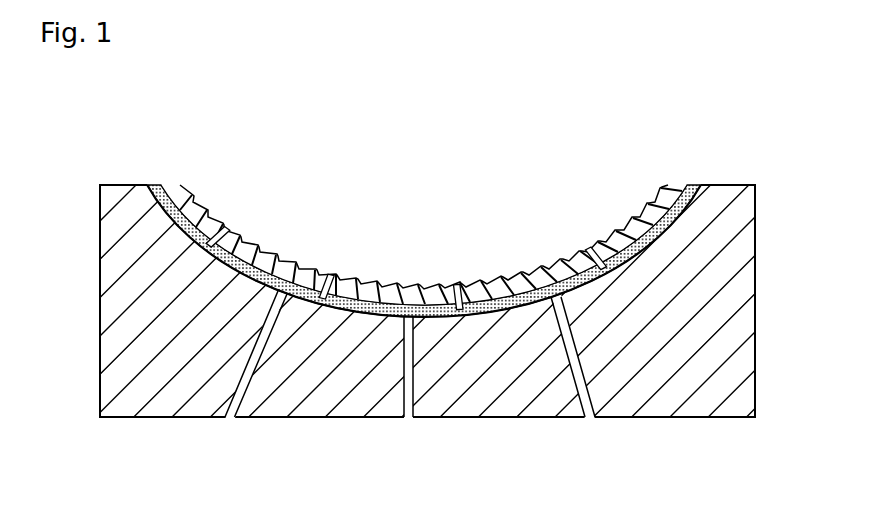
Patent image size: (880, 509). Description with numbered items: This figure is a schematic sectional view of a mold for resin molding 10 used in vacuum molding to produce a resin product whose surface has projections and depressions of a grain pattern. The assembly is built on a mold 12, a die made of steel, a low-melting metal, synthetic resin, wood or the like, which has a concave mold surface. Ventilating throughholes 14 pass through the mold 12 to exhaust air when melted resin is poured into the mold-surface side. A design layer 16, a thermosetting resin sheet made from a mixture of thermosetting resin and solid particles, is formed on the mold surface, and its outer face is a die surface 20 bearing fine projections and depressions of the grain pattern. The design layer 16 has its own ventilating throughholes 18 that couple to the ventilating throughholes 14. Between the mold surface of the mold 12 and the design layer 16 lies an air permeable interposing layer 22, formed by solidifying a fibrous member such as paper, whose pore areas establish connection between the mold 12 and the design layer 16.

The mold for resin molding 10 is at (418, 131).
The mold 12 is at (166, 405).
The ventilating throughholes 14 is at (227, 415).
The design layer 16 is at (646, 220).
The ventilating throughholes 18 is at (218, 229).
The die surface 20 is at (516, 279).
The air permeable interposing layer 22 is at (650, 236).